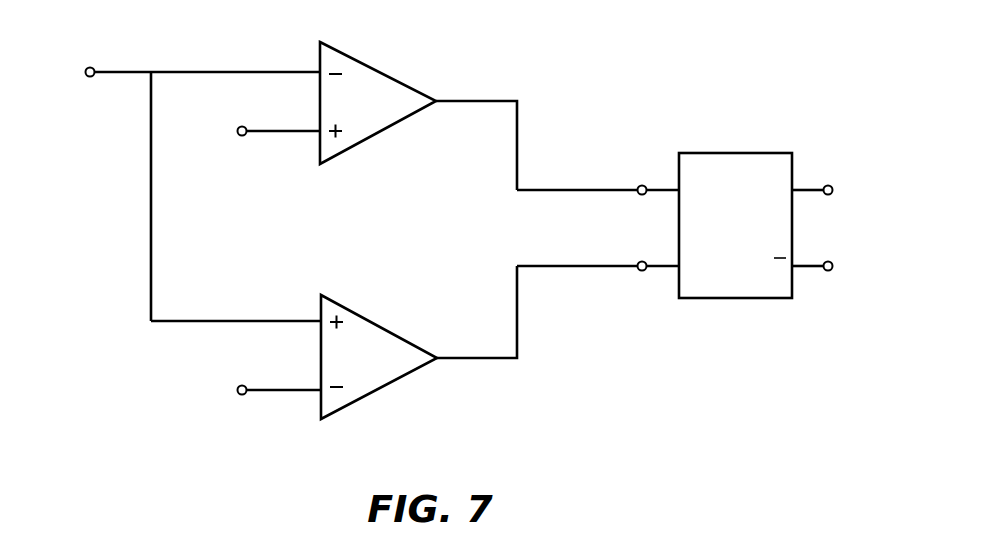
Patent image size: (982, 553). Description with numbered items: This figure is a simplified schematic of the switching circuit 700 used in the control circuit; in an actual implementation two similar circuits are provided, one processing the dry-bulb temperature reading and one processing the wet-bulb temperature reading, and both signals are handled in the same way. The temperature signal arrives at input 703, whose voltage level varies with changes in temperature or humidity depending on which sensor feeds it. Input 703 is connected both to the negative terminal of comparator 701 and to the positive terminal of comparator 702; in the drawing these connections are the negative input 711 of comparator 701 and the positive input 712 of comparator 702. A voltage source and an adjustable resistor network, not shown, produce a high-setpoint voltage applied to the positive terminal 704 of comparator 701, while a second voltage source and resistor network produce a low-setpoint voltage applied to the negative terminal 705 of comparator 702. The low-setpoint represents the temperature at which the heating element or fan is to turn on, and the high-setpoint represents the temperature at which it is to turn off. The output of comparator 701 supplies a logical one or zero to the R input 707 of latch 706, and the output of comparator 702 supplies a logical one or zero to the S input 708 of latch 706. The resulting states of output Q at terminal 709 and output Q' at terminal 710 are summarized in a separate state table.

The switching circuit 700 is at (607, 372).
The comparator 701 is at (397, 123).
The comparator 702 is at (400, 378).
The input 703 is at (86, 78).
The positive terminal 704 is at (243, 137).
The negative terminal 705 is at (241, 396).
The latch 706 is at (737, 299).
The R input 707 is at (641, 185).
The S input 708 is at (642, 272).
The terminal 709 is at (832, 186).
The terminal 710 is at (829, 271).
The inverting input of first comparator 711 is at (318, 70).
The non-inverting input of second comparator 712 is at (320, 318).